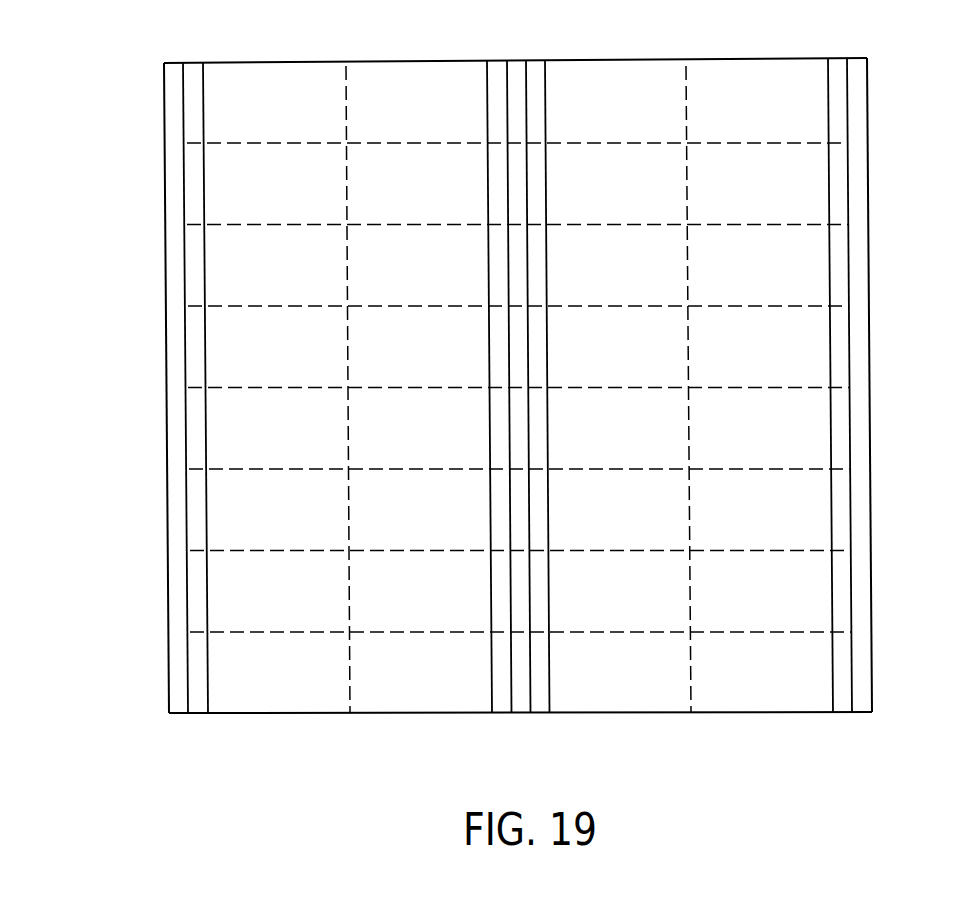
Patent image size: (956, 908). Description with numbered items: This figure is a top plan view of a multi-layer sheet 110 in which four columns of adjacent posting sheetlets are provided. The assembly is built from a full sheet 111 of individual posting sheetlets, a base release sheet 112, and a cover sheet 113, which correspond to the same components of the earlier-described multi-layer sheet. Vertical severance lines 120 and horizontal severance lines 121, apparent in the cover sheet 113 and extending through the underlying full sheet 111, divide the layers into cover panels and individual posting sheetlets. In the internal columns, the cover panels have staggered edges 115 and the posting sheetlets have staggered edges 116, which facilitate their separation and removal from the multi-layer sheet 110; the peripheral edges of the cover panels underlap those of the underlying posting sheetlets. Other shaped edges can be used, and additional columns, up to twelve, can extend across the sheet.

The multi-layer sheet 110 is at (454, 385).
The full sheet 111 is at (195, 419).
The base release sheet 112 is at (179, 497).
The cover sheet 113 is at (283, 92).
The staggered edges 115 is at (487, 72).
The staggered edges 116 is at (506, 90).
The vertical severance lines 120 is at (350, 685).
The horizontal severance lines 121 is at (255, 634).